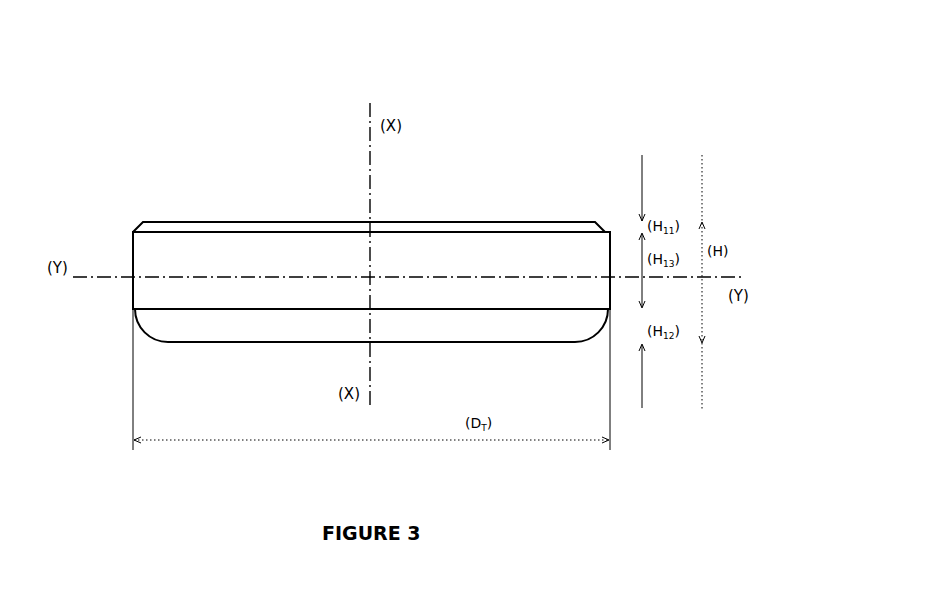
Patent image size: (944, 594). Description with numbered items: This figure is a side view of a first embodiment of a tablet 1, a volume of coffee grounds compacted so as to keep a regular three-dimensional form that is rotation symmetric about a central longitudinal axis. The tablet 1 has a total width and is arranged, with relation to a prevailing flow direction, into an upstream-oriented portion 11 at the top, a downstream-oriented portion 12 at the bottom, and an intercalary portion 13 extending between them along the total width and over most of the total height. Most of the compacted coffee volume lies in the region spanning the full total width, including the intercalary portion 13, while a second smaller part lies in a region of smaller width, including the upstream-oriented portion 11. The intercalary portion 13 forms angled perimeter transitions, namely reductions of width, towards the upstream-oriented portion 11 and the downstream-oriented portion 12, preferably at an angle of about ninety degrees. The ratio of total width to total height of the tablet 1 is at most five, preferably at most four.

The tablet 1 is at (325, 223).
The upstream-oriented portion 11 is at (186, 222).
The downstream-oriented portion 12 is at (184, 345).
The intercalary portion 13 is at (132, 297).